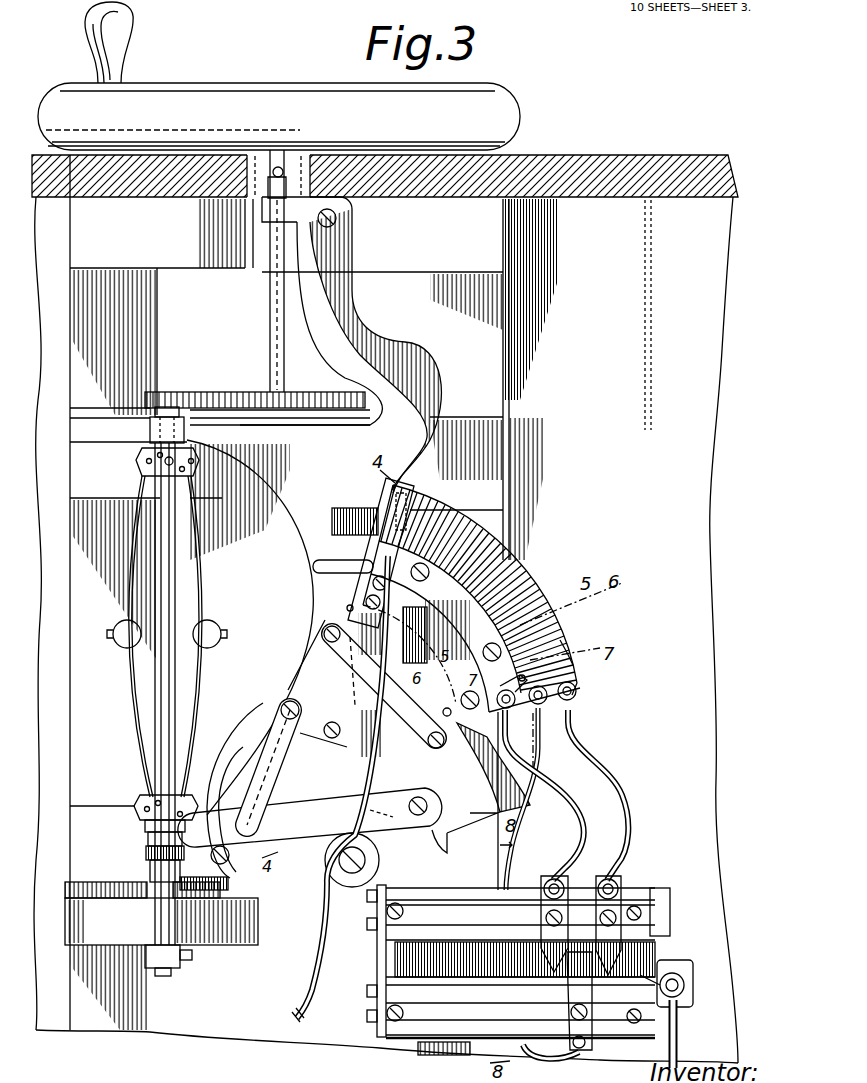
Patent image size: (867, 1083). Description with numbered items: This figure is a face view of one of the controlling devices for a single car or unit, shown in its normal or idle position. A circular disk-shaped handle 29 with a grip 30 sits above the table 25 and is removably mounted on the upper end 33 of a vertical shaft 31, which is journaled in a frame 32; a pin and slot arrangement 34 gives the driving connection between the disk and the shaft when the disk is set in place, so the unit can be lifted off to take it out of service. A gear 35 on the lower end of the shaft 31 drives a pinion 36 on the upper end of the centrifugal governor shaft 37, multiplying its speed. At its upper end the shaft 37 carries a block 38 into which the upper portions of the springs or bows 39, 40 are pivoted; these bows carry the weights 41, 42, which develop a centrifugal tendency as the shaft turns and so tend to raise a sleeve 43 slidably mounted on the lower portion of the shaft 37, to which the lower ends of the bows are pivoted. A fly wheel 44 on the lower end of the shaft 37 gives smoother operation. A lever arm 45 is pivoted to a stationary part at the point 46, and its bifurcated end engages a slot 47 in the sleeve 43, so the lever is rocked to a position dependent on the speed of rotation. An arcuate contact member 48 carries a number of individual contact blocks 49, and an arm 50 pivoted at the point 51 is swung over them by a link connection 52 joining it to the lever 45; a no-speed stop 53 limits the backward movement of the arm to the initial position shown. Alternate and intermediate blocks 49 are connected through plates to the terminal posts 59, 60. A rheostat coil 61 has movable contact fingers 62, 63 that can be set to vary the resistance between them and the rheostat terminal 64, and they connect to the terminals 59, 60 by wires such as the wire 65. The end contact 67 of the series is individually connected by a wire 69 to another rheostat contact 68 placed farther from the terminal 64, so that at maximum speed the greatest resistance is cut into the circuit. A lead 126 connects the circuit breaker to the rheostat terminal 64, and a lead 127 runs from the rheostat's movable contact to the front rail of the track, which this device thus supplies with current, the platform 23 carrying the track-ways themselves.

The table or platform 23 is at (386, 630).
The table 25 is at (700, 138).
The circular disk-shaped handle 29 is at (515, 115).
The grip 30 is at (118, 30).
The vertical shaft 31 is at (275, 295).
The frame 32 is at (325, 323).
The upper end of shaft 33 is at (282, 160).
The pin and slot arrangement 34 is at (285, 170).
The gear 35 is at (245, 392).
The pinion 36 is at (170, 392).
The centrifugal governor shaft 37 is at (167, 555).
The block 38 is at (140, 462).
The spring or bow 39 is at (208, 592).
The spring or bow 40 is at (128, 710).
The weight 41 is at (216, 640).
The weight 42 is at (120, 638).
The sleeve 43 is at (150, 824).
The fly wheel 44 is at (222, 930).
The lever arm 45 is at (303, 823).
The pivot point 46 is at (432, 827).
The slot 47 is at (152, 840).
The arcuate contact member 48 is at (531, 550).
The contact blocks 49 is at (510, 566).
The arm 50 is at (358, 626).
The pivot point 51 is at (332, 745).
The link connection 52 is at (280, 742).
The no-speed stop 53 is at (366, 687).
The terminal post 59 is at (578, 692).
The terminal post 60 is at (545, 713).
The rheostat coil 61 is at (400, 977).
The movable contact finger 62 is at (610, 902).
The movable contact finger 63 is at (572, 1020).
The rheostat terminal 64 is at (682, 985).
The wire 65 is at (628, 798).
The end contact 67 is at (572, 647).
The rheostat contact 68 is at (542, 905).
The wire 69 is at (584, 812).
The lead 126 is at (679, 1040).
The lead 127 is at (296, 1010).